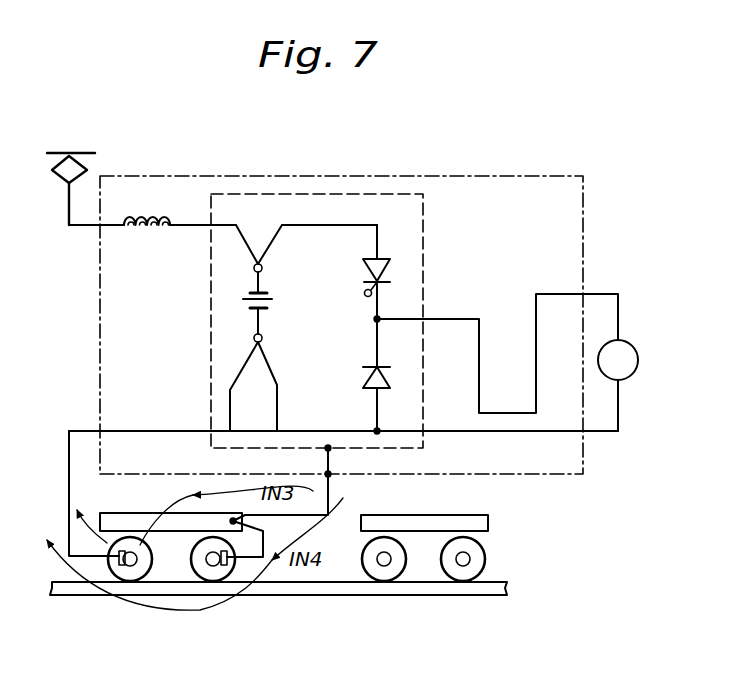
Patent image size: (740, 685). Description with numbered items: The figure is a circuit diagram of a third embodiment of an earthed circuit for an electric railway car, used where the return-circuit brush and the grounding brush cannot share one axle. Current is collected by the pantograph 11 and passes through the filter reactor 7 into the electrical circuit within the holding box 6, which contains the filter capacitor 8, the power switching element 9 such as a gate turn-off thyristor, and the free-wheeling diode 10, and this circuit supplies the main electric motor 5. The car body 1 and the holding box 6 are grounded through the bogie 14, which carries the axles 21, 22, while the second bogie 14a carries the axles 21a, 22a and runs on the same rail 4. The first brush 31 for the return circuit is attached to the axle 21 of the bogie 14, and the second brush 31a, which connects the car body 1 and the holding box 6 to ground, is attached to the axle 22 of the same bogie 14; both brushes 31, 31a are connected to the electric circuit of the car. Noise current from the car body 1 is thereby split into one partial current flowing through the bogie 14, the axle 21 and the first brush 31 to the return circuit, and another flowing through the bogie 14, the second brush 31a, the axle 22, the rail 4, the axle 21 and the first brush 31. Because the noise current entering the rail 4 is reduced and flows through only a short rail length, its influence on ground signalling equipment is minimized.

The car body 1 is at (236, 176).
The rail 4 is at (318, 596).
The main electric motor 5 is at (630, 378).
The holding box 6 is at (380, 194).
The filter reactor 7 is at (168, 218).
The filter capacitor 8 is at (272, 299).
The power switching element 9 is at (388, 263).
The free-wheeling diode 10 is at (390, 382).
The pantograph 11 is at (60, 180).
The bogie 14 is at (128, 513).
The bogie 14a is at (460, 515).
The axle 21 is at (154, 571).
The axle 22 is at (262, 574).
The axle 21a is at (402, 572).
The axle 22a is at (485, 560).
The first brush 31 is at (122, 566).
The second brush 31a is at (226, 566).